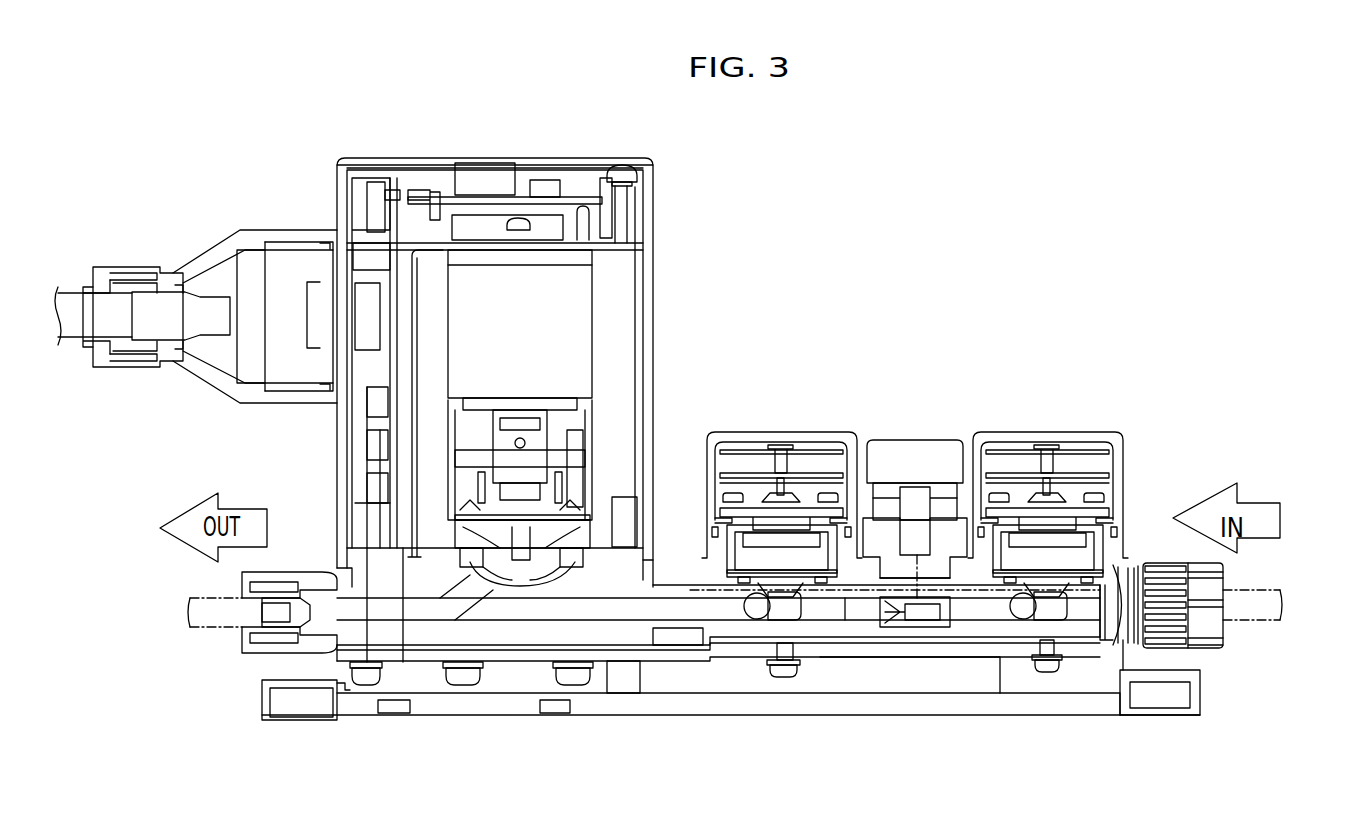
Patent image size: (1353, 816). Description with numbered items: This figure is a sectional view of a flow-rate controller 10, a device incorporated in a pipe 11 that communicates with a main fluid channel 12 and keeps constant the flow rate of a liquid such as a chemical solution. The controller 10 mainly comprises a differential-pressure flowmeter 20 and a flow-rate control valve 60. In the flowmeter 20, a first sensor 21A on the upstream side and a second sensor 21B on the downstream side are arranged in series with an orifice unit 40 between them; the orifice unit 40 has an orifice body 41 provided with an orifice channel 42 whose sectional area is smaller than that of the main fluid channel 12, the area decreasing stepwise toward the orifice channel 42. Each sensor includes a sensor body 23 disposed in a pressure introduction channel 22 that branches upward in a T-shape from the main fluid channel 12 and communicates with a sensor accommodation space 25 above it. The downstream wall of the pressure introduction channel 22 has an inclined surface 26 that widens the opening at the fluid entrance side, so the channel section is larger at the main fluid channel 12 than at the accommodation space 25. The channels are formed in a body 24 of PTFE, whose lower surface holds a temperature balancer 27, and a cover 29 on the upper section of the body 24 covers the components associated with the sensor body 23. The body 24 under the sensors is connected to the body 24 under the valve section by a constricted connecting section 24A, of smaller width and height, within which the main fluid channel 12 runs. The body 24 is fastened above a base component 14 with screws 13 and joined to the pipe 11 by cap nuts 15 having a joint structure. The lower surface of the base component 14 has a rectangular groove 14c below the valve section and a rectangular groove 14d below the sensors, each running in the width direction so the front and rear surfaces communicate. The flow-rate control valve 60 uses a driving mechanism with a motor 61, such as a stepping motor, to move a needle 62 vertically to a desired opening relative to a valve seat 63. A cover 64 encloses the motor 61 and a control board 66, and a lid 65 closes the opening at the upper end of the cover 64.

The flow-rate controller 10 is at (906, 120).
The pipe 11 is at (210, 632).
The main fluid channel 12 is at (425, 603).
The screws 13 is at (365, 688).
The base component 14 is at (1160, 700).
The groove (second groove) 14c is at (468, 700).
The groove (third groove) 14d is at (975, 700).
The cap nuts 15 is at (258, 650).
The differential-pressure flowmeter 20 is at (918, 385).
The first sensor 21A is at (1114, 428).
The second sensor 21B is at (748, 428).
The pressure introduction channel 22 is at (805, 620).
The sensor body 23 is at (740, 545).
The body 24 is at (848, 622).
The connecting section 24A is at (672, 630).
The sensor accommodation space 25 is at (745, 580).
The inclined surface 26 is at (755, 620).
The temperature balancer 27 is at (914, 563).
The cover 29 is at (803, 432).
The orifice unit 40 is at (915, 552).
The orifice body 41 is at (940, 600).
The orifice channel 42 is at (905, 610).
The flow-rate control valve 60 is at (498, 152).
The motor 61 is at (620, 338).
The needle 62 is at (522, 555).
The valve seat 63 is at (540, 575).
The cover 64 is at (650, 276).
The lid 65 is at (650, 182).
The control board 66 is at (415, 337).